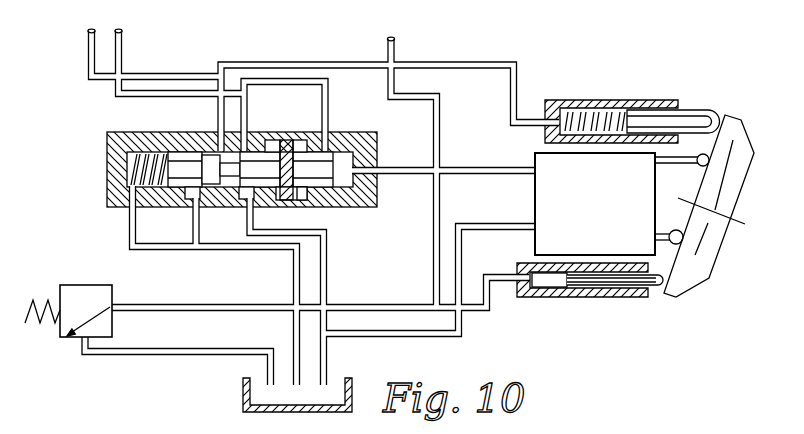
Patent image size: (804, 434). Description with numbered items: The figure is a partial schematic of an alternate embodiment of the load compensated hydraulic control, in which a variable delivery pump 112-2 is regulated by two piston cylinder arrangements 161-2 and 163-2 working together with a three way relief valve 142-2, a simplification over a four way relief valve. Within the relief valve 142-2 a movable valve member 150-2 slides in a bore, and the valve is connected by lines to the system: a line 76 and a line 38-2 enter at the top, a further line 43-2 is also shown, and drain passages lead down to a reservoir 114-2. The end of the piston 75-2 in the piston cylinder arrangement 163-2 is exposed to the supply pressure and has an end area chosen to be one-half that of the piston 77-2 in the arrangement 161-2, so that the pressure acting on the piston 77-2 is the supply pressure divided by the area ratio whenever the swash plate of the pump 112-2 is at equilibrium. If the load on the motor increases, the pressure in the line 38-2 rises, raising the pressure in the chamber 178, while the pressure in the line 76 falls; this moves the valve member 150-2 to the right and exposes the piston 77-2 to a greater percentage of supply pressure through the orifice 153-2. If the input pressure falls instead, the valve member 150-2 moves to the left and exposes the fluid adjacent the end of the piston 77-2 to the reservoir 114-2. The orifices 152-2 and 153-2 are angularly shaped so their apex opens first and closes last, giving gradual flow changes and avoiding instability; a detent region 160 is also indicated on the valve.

The three way relief valve 142-2 is at (117, 148).
The valve member 150-2 is at (215, 163).
The chamber 178 is at (271, 140).
The orifice 152-2 is at (191, 199).
The orifice 153-2 is at (247, 199).
The detent groove 160 is at (304, 199).
The variable delivery pump 112-2 is at (557, 211).
The piston cylinder arrangement 161-2 is at (602, 102).
The piston 77-2 is at (700, 110).
The piston cylinder arrangement 163-2 is at (592, 296).
The piston 75-2 is at (636, 279).
The reservoir 114-2 is at (246, 400).
The line 76 is at (140, 40).
The line 38-2 is at (182, 49).
The line to 43-2 is at (404, 158).